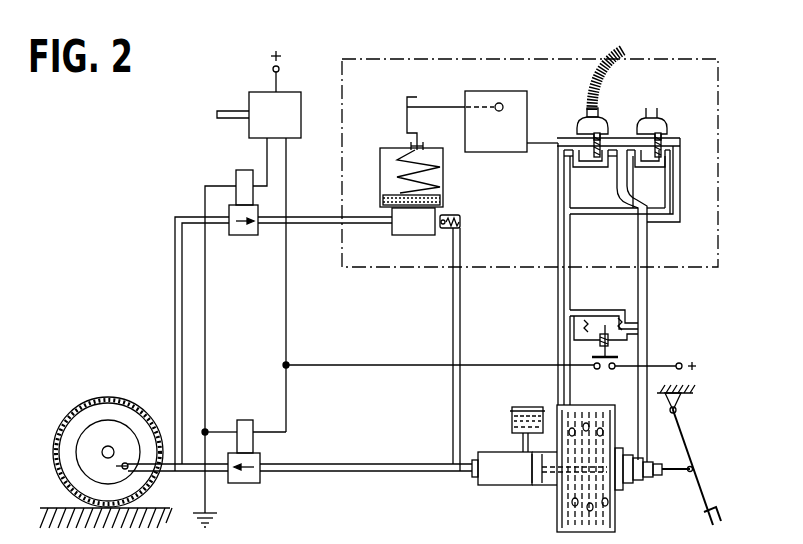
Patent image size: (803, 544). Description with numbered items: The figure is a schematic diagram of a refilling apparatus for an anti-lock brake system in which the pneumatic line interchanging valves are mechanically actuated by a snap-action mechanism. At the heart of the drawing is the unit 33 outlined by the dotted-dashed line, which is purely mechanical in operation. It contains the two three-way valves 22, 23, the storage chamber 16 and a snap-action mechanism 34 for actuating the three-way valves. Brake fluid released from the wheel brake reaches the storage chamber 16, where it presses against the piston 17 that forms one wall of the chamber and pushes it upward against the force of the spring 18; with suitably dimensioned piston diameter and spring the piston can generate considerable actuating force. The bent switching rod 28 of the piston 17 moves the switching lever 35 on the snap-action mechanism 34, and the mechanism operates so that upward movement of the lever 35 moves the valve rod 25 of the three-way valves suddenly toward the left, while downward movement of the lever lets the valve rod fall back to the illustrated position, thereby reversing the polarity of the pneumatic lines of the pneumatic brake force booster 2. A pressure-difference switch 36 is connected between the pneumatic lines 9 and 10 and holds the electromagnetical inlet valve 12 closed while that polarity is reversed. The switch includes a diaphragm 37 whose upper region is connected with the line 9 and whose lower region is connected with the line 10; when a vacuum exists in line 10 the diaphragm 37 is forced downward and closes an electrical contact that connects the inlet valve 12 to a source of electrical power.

The pneumatic brake force booster 2 is at (546, 497).
The connecting line 9 is at (558, 352).
The connecting line 10 is at (645, 348).
The electromagnetical inlet valve 12 is at (247, 479).
The storage chamber 16 is at (414, 226).
The piston 17 is at (383, 200).
The spring 18 is at (382, 164).
The three-way valve 22 is at (583, 118).
The three-way valve 23 is at (668, 118).
The valve rod 25 is at (541, 145).
The bent switching rod 28 is at (405, 118).
The unit 33 is at (530, 268).
The snap-action mechanism 34 is at (493, 137).
The switching lever 35 is at (445, 107).
The pressure-difference switch 36 is at (632, 304).
The diaphragm 37 is at (588, 320).